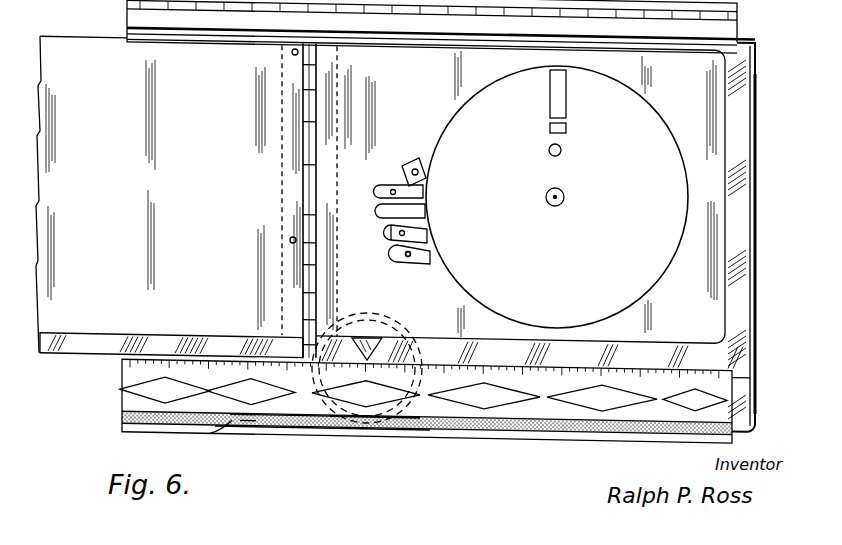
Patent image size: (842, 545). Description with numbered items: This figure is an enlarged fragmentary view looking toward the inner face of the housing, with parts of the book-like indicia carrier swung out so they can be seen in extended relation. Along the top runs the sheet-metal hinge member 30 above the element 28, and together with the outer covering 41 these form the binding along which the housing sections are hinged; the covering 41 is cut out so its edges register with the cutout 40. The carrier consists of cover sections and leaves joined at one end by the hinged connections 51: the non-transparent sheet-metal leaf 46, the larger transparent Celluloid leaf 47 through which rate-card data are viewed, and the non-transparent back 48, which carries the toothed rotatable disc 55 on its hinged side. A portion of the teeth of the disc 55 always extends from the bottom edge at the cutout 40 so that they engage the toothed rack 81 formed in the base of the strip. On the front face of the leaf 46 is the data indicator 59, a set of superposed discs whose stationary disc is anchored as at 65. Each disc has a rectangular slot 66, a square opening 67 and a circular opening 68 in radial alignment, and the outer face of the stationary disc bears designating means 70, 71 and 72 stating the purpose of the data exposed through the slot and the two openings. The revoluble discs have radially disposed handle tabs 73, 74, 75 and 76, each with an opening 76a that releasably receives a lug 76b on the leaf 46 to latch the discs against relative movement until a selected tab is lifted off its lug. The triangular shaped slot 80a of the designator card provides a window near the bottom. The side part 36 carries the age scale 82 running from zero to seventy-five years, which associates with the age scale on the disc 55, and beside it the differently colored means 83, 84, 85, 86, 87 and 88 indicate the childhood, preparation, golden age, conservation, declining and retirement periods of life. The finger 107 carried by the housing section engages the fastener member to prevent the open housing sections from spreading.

The cover plate 28 is at (755, 43).
The hinge member 30 is at (730, 30).
The side part 36 is at (725, 388).
The cutout 40 is at (256, 420).
The outer covering 41 is at (267, 434).
The leaf 46 is at (708, 118).
The leaf 47 is at (738, 231).
The back 48 is at (752, 265).
The hinged connections 51 is at (330, 278).
The toothed rotatable disc 55 is at (397, 327).
The data indicator 59 is at (657, 262).
The anchor 65 is at (414, 160).
The rectangular slot 66 is at (565, 69).
The square opening 67 is at (566, 124).
The circular opening 68 is at (553, 162).
The designating means 70 is at (485, 109).
The designating means 71 is at (497, 128).
The designating means 72 is at (488, 156).
The handle tab 73 is at (388, 186).
The handle tab 74 is at (424, 210).
The handle tab 75 is at (418, 229).
The handle tab 76 is at (426, 251).
The opening 76a is at (408, 257).
The lug 76b is at (388, 232).
The triangular shaped slot 80a is at (420, 334).
The toothed rack 81 is at (388, 441).
The age scale 82 is at (285, 420).
The childhood indicating means 83 is at (158, 398).
The preparation indicating means 84 is at (244, 420).
The golden age indicating means 85 is at (363, 404).
The conservation indicating means 86 is at (477, 404).
The declining indicating means 87 is at (597, 408).
The retirement indicating means 88 is at (677, 404).
The finger 107 is at (252, 420).